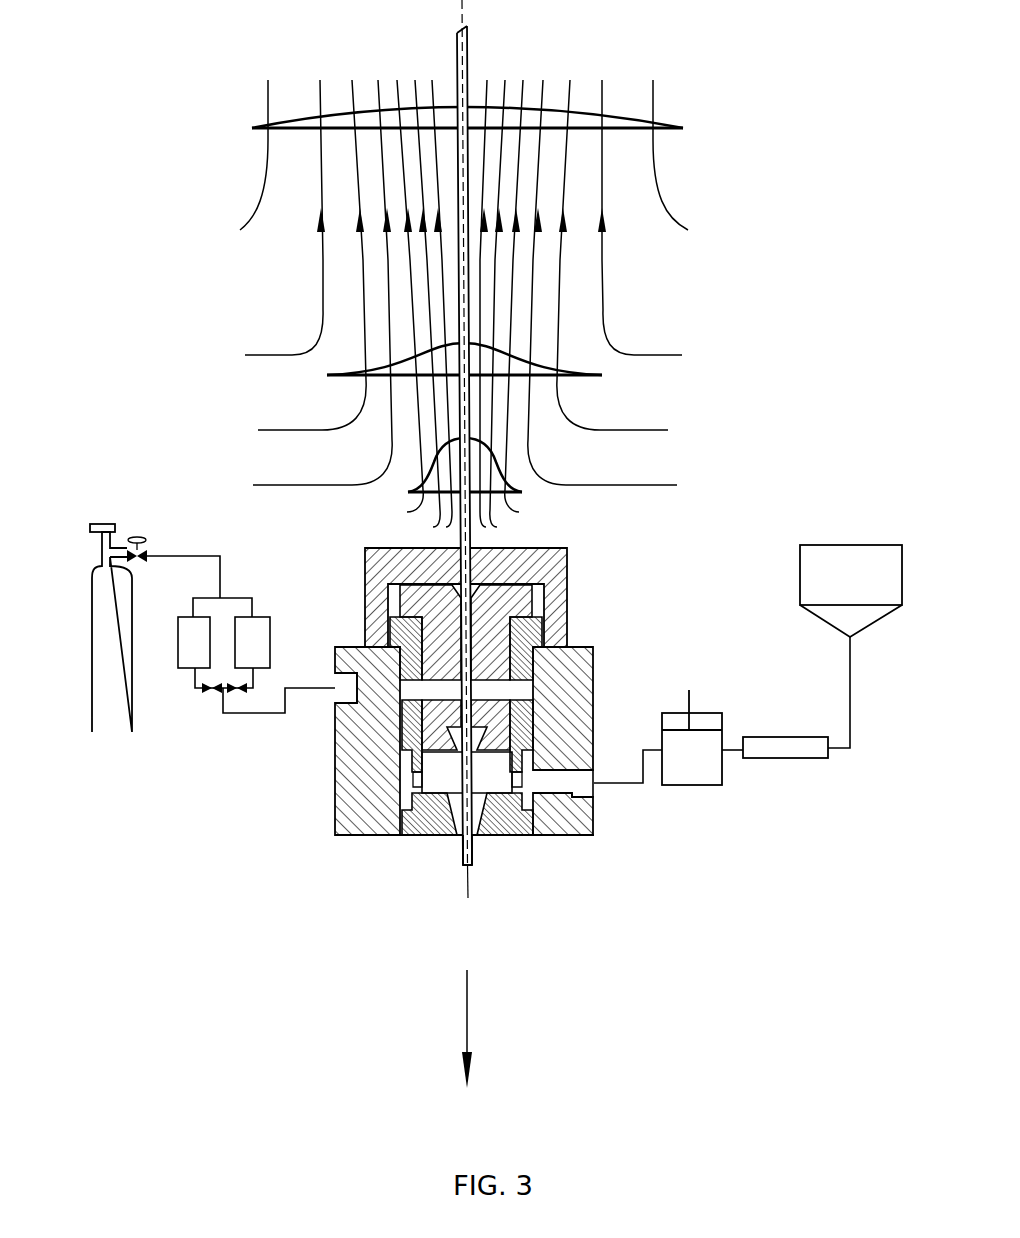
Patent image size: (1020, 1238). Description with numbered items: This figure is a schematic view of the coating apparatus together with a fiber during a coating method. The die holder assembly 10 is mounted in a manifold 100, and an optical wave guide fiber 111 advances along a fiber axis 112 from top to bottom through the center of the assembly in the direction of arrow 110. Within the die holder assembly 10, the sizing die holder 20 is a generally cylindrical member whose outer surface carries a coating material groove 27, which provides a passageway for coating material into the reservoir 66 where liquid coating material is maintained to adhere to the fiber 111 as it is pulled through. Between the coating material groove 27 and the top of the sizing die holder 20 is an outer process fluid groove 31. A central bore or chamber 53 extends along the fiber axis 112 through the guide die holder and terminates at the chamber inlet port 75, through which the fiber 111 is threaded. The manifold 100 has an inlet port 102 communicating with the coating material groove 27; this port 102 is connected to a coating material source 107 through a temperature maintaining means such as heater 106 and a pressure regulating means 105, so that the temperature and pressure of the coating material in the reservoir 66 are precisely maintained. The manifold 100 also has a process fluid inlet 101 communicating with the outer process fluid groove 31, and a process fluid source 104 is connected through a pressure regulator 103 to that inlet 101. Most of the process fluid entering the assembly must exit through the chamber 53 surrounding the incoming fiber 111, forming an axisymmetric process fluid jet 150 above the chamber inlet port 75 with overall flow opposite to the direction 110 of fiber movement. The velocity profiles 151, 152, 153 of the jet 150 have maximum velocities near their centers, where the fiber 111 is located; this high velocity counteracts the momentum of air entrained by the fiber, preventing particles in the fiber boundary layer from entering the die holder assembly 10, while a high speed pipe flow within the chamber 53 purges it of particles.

The die holder assembly 10 is at (473, 721).
The sizing die holder 20 is at (407, 835).
The coating material groove 27 is at (563, 837).
The outer process fluid groove 31 is at (532, 688).
The central bore or chamber 53 is at (567, 578).
The reservoir 66 is at (502, 836).
The chamber inlet port 75 is at (472, 538).
The manifold 100 is at (360, 787).
The process fluid inlet 101 is at (378, 690).
The inlet port 102 is at (550, 778).
The pressure regulator 103 is at (258, 633).
The process fluid source 104 is at (108, 722).
The pressure regulating means 105 is at (692, 775).
The heater 106 is at (772, 750).
The coating material source 107 is at (850, 577).
The arrow 110 is at (468, 1000).
The optical wave guide fiber 111 is at (463, 855).
The fiber axis 112 is at (468, 880).
The process fluid jet 150 is at (190, 224).
The velocity profile 151 is at (508, 480).
The velocity profile 152 is at (543, 362).
The velocity profile 153 is at (613, 117).